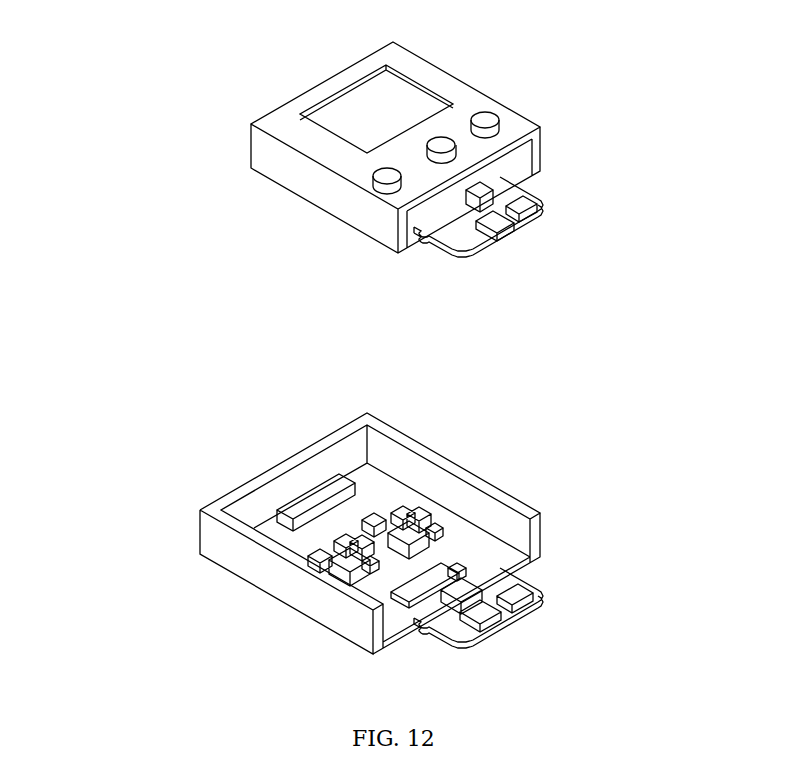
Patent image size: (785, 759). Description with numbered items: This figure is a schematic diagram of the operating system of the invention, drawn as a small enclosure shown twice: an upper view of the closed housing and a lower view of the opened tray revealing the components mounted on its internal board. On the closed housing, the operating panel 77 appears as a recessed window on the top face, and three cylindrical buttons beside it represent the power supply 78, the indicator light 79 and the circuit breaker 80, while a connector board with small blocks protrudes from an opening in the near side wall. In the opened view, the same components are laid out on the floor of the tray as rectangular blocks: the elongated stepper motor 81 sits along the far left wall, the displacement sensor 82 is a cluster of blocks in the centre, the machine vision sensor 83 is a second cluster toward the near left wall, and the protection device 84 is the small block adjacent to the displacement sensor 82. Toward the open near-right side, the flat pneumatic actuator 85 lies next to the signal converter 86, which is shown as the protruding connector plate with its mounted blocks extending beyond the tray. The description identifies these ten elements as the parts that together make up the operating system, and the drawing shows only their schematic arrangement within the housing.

The operating panel 77 is at (373, 113).
The power supply 78 is at (400, 182).
The indicator light 79 is at (443, 145).
The circuit breaker 80 is at (473, 110).
The stepper motor 81 is at (323, 497).
The displacement sensor 82 is at (407, 533).
The machine vision sensor 83 is at (363, 567).
The protection device 84 is at (380, 520).
The pneumatic actuator 85 is at (400, 592).
The signal converter 86 is at (407, 588).